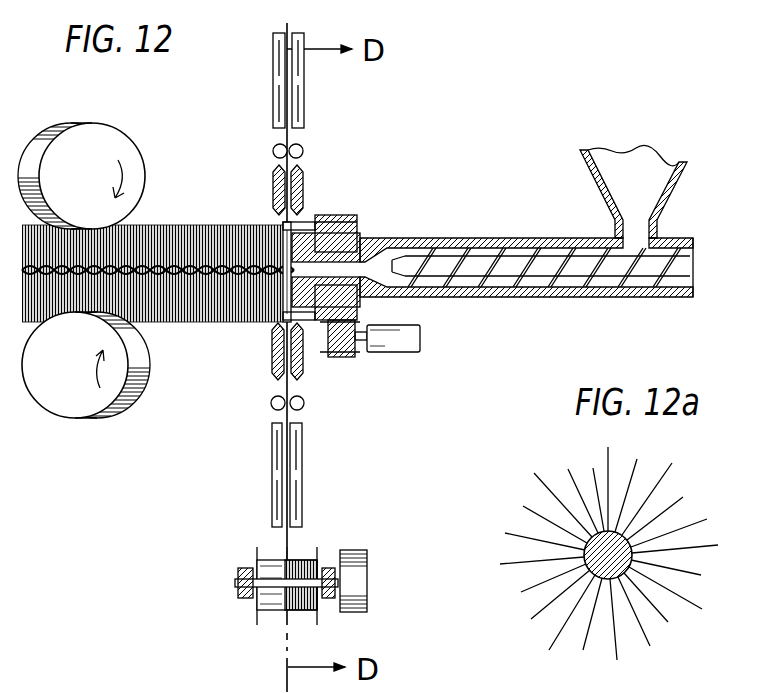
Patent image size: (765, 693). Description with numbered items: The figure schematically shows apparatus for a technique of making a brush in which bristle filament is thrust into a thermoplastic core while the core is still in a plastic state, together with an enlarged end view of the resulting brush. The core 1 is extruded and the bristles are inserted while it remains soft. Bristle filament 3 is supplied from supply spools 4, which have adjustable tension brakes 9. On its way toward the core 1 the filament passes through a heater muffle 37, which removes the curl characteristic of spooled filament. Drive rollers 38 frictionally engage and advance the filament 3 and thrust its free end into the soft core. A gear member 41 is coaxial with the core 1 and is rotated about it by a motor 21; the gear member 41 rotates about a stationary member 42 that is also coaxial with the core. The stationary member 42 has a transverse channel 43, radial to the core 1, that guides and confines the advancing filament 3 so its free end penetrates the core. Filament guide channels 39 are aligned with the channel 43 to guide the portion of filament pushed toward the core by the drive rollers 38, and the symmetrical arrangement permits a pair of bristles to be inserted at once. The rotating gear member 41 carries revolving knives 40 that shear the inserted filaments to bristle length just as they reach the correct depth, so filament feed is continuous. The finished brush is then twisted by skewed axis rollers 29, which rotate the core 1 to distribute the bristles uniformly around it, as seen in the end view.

In FIG. 12, the core 1 is at (268, 262).
In FIG. 12A, the core 1 is at (632, 560).
In FIG. 12, the bristle filament 3 is at (290, 545).
In FIG. 12A, the bristle filament 3 is at (685, 507).
In FIG. 12, the supply spools 4 is at (273, 610).
In FIG. 12, the adjustable tension brakes 9 is at (368, 575).
In FIG. 12, the motor 21 is at (397, 352).
In FIG. 12, the skewed axis rollers 29 is at (128, 155).
In FIG. 12, the heater muffle 37 is at (300, 97).
In FIG. 12, the drive rollers 38 is at (303, 147).
In FIG. 12, the filament guide channels 39 is at (302, 192).
In FIG. 12, the revolving knives 40 is at (307, 222).
In FIG. 12, the gear member 41 is at (357, 225).
In FIG. 12, the stationary member 42 is at (357, 306).
In FIG. 12, the transverse channel 43 is at (282, 293).